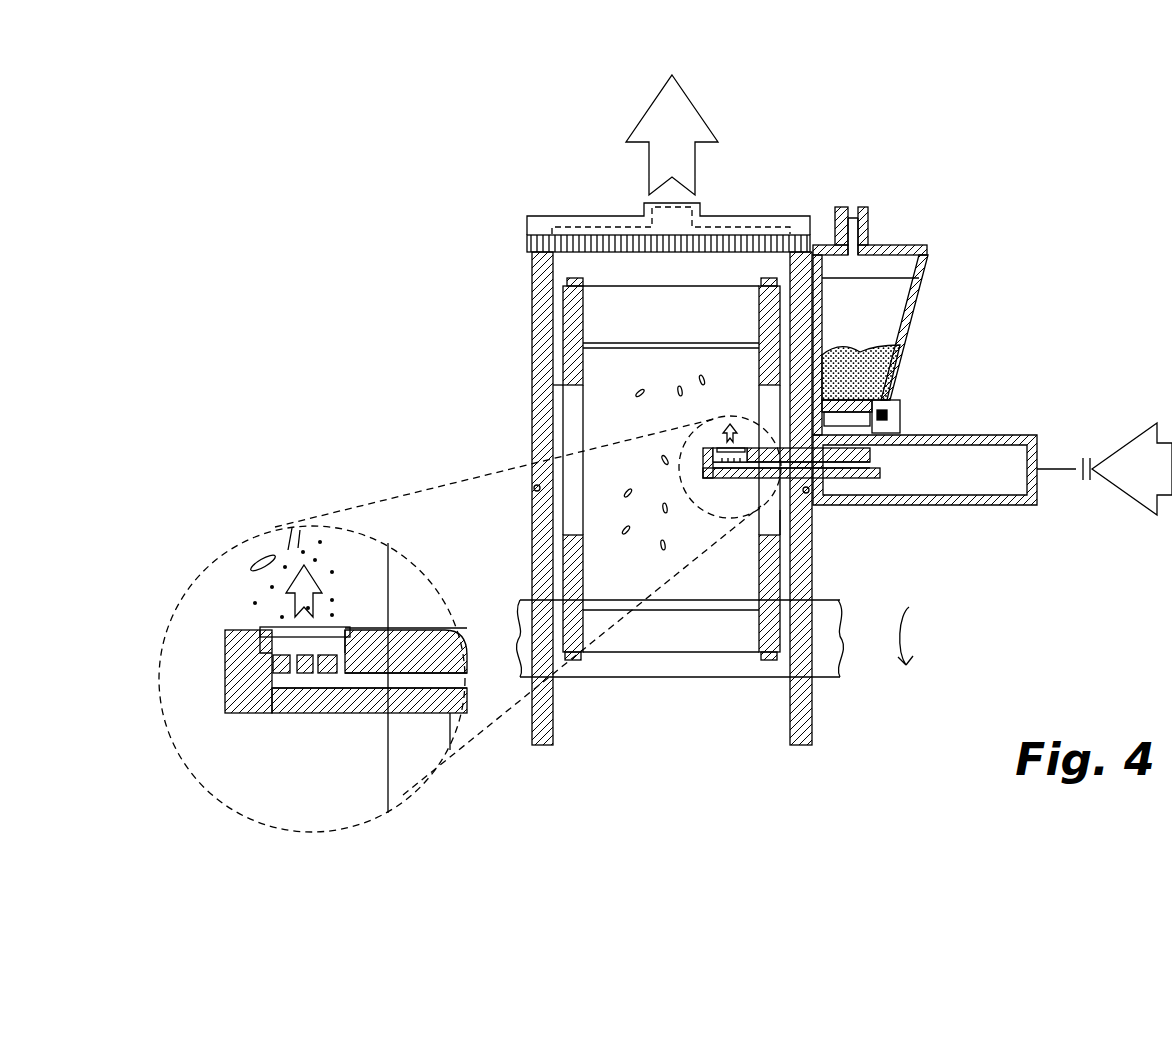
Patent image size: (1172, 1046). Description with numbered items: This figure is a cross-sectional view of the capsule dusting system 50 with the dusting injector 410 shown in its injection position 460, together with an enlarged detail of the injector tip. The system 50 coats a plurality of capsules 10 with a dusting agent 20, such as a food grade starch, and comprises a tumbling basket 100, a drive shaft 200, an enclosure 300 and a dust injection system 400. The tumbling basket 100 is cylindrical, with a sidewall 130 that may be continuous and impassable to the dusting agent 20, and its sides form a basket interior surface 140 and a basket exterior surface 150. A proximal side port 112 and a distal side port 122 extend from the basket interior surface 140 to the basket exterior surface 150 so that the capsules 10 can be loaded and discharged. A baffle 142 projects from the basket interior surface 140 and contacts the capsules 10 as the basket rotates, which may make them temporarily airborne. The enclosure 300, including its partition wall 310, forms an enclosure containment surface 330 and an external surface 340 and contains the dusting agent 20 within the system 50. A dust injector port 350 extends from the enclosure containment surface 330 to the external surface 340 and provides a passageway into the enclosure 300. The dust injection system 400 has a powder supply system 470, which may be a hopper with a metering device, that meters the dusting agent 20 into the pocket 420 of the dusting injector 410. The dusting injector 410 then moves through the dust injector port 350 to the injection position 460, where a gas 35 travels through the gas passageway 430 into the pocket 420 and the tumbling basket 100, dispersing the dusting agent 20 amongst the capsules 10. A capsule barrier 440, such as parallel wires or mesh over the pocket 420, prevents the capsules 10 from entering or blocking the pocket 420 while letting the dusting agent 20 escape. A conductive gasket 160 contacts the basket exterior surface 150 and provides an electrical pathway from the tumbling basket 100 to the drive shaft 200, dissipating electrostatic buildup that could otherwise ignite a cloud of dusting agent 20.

The capsules 10 is at (665, 508).
The dusting agent 20 is at (868, 347).
The gas 35 is at (815, 390).
The capsule dusting system 50 is at (330, 232).
The tumbling basket 100 is at (565, 655).
The proximal side port 112 is at (785, 525).
The distal side port 122 is at (555, 395).
The sidewall 130 is at (682, 343).
The basket interior surface 140 is at (388, 770).
The baffle 142 is at (583, 349).
The basket exterior surface 150 is at (450, 728).
The conductive gasket 160 is at (822, 280).
The drive shaft 200 is at (822, 678).
The enclosure 300 is at (532, 240).
The partition wall 310 is at (532, 287).
The enclosure containment surface 330 is at (578, 258).
The external surface 340 is at (600, 226).
The dust injector port 350 is at (805, 452).
The dust injection system 400 is at (925, 435).
The dusting injector 410 is at (703, 480).
The pocket 420 is at (260, 633).
The gas passageway 430 is at (380, 685).
The capsule barrier 440 is at (345, 628).
The injection position 460 is at (225, 672).
The powder supply system 470 is at (927, 258).